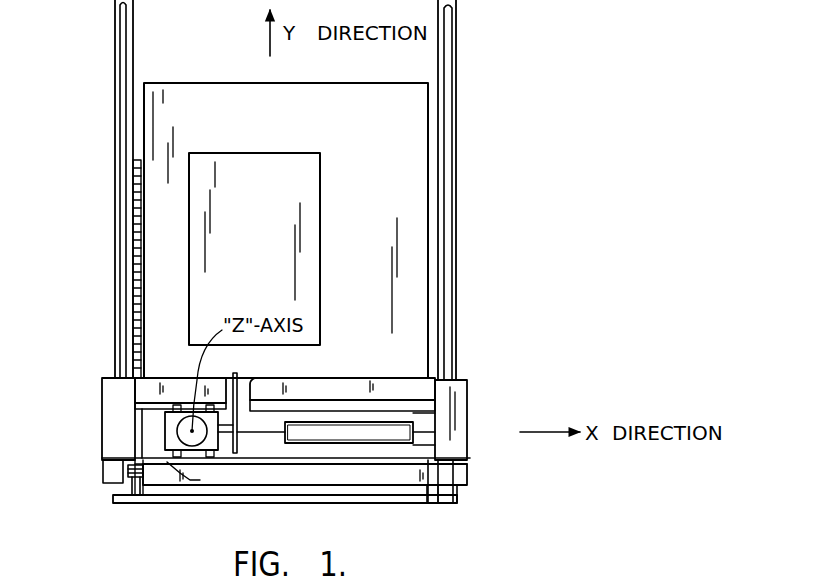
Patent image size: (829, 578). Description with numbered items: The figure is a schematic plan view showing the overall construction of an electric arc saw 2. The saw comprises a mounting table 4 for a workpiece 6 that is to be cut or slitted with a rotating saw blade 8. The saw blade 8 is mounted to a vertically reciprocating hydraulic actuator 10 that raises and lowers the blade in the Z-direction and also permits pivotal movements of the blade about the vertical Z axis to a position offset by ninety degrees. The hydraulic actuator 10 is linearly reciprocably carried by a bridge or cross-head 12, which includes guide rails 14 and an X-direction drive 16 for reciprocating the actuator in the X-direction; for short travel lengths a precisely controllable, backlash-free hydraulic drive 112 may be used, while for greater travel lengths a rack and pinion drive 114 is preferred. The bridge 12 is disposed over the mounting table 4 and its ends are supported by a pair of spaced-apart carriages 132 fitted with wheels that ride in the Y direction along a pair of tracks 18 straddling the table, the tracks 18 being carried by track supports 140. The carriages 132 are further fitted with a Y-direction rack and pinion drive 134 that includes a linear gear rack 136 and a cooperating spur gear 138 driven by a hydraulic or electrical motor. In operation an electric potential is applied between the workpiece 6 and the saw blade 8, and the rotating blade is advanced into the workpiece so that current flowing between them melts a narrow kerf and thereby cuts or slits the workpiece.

The arc saw 2 is at (641, 48).
The mounting table 4 is at (410, 131).
The workpiece 6 is at (313, 218).
The saw blade 8 is at (240, 383).
The hydraulic actuator 10 is at (197, 437).
The bridge 12 is at (400, 376).
The guide rails 14 is at (320, 398).
The X-direction drive 16 is at (177, 386).
The tracks 18 is at (121, 352).
The hydraulic drive 112 is at (305, 443).
The rack and pinion drive 114 is at (403, 452).
The carriages 132 is at (107, 428).
The Y-direction rack and pinion drive 134 is at (123, 490).
The linear gear rack 136 is at (137, 213).
The spur gear 138 is at (145, 493).
The track supports 140 is at (118, 284).